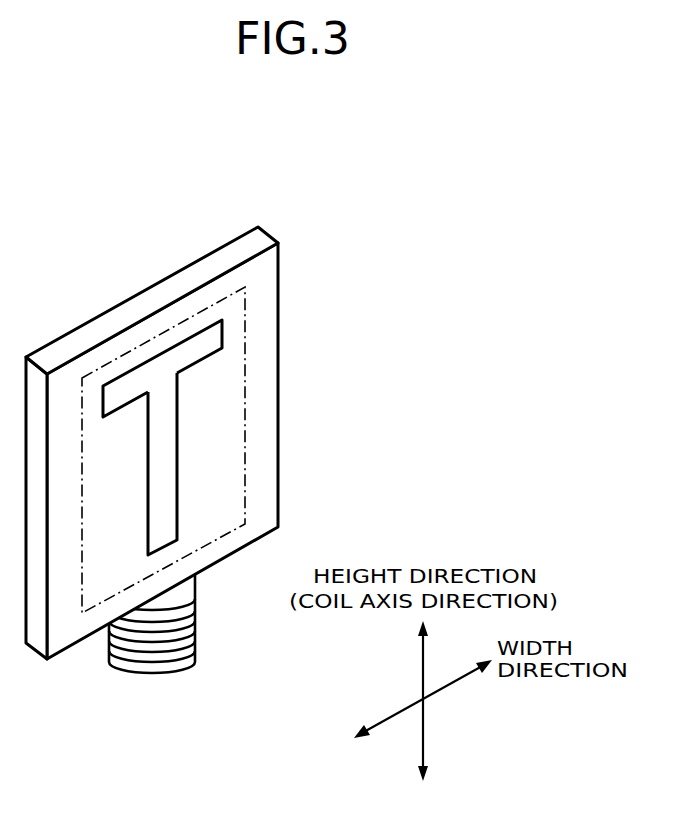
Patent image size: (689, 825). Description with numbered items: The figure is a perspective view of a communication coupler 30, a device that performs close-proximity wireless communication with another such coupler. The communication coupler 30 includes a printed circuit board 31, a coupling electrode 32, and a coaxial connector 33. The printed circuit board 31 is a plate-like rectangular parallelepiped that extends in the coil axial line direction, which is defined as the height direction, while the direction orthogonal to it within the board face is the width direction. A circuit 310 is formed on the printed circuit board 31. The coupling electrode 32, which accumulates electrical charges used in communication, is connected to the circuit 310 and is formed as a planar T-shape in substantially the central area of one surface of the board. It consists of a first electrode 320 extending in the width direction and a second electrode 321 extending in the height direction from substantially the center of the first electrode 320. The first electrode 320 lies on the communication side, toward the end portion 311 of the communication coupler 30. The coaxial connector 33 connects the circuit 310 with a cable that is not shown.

The communication coupler 30 is at (196, 400).
The printed circuit board 31 is at (262, 393).
The end portion 311 is at (108, 327).
The circuit 310 is at (218, 480).
The coupling electrode 32 is at (231, 417).
The first electrode 320 is at (213, 340).
The second electrode 321 is at (162, 453).
The coaxial connector 33 is at (200, 613).